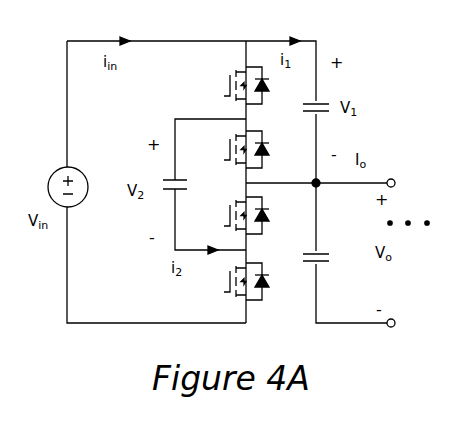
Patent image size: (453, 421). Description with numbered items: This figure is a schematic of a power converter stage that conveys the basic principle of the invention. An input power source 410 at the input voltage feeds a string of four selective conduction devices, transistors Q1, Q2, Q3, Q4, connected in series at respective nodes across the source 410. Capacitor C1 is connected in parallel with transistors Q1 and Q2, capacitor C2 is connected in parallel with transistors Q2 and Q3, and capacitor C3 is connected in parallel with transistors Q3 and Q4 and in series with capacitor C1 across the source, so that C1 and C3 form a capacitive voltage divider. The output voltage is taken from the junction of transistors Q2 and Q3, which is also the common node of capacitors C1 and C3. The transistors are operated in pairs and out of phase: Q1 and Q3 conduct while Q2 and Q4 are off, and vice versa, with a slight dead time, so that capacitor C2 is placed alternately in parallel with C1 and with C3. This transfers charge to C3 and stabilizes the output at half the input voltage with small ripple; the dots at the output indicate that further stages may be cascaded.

The input power source 410 is at (60, 168).
The transistor Q1 is at (232, 85).
The transistor Q2 is at (232, 149).
The transistor Q3 is at (232, 215).
The transistor Q4 is at (232, 281).
The capacitor C1 is at (302, 113).
The capacitor C2 is at (168, 140).
The capacitor C3 is at (327, 272).